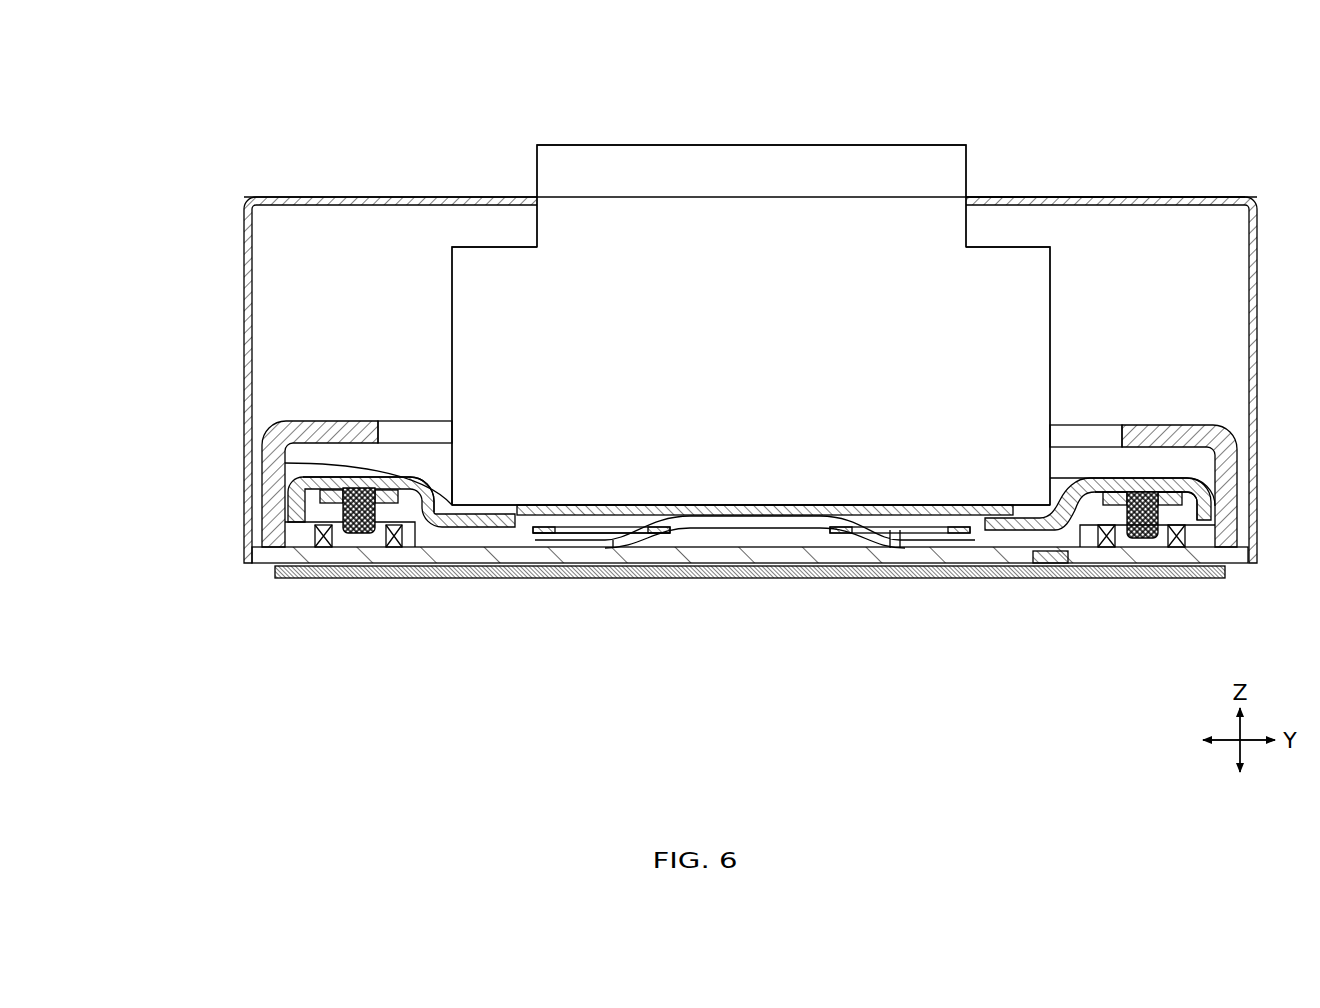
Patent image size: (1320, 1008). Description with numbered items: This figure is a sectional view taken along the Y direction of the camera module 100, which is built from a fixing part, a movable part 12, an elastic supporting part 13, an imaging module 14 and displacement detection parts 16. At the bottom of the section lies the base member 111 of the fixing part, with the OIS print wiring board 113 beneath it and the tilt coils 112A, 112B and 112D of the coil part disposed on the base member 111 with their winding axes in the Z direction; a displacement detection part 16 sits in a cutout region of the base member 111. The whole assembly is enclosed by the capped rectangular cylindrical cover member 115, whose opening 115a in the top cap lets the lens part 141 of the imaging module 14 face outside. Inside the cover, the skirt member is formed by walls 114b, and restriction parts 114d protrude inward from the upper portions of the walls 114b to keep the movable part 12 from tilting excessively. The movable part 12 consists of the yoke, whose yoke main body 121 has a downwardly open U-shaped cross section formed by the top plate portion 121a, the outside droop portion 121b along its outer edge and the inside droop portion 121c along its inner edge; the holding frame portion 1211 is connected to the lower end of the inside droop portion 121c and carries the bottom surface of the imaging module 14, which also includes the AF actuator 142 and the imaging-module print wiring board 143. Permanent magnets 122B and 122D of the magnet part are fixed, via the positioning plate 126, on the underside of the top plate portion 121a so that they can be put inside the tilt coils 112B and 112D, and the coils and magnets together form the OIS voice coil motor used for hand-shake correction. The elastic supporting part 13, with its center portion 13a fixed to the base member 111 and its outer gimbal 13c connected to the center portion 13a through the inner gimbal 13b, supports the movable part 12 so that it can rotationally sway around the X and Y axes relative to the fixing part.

The camera module 100 is at (1056, 81).
The movable part 12 is at (652, 454).
The yoke main body 121 is at (673, 471).
The holding frame portion 1211 is at (453, 505).
The top plate portion 121a is at (365, 468).
The outside droop portion 121b is at (300, 495).
The inside droop portion 121c is at (300, 442).
The permanent magnet 122B is at (362, 535).
The permanent magnet 122D is at (1160, 540).
The tilt coil 112A is at (650, 533).
The tilt coil 112B is at (318, 537).
The tilt coil 112D is at (1107, 548).
The positioning plate 126 is at (408, 520).
The base member 111 is at (527, 551).
The OIS print wiring board 113 is at (765, 579).
The elastic supporting part 13 is at (754, 593).
The center portion 13a is at (662, 534).
The inner gimbal 13b is at (951, 579).
The outer gimbal 13c is at (565, 534).
The imaging module 14 is at (751, 273).
The lens part 141 is at (568, 146).
The AF actuator 142 is at (483, 246).
The imaging-module print wiring board 143 is at (638, 505).
The displacement detection part 16 is at (1048, 565).
The wall 114b is at (262, 546).
The restriction part 114d is at (1160, 425).
The cover member 115 is at (243, 245).
The opening 115a is at (1048, 198).